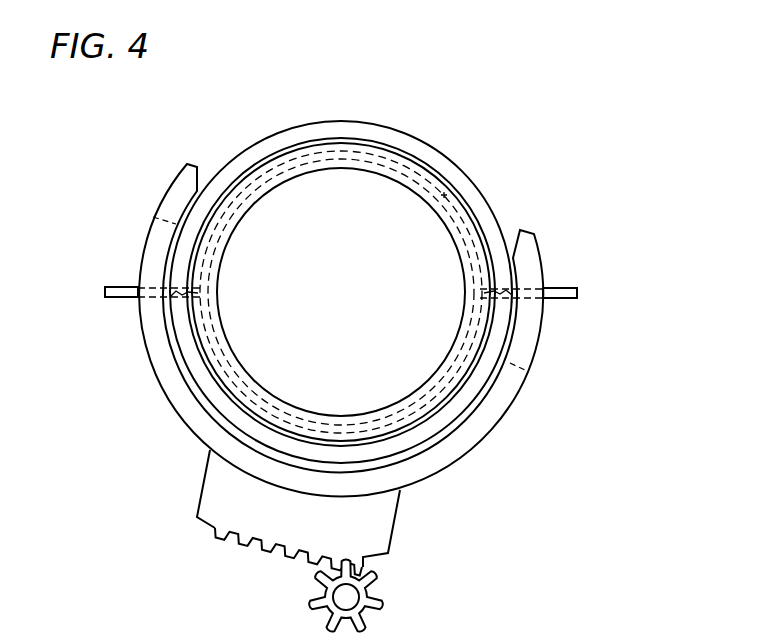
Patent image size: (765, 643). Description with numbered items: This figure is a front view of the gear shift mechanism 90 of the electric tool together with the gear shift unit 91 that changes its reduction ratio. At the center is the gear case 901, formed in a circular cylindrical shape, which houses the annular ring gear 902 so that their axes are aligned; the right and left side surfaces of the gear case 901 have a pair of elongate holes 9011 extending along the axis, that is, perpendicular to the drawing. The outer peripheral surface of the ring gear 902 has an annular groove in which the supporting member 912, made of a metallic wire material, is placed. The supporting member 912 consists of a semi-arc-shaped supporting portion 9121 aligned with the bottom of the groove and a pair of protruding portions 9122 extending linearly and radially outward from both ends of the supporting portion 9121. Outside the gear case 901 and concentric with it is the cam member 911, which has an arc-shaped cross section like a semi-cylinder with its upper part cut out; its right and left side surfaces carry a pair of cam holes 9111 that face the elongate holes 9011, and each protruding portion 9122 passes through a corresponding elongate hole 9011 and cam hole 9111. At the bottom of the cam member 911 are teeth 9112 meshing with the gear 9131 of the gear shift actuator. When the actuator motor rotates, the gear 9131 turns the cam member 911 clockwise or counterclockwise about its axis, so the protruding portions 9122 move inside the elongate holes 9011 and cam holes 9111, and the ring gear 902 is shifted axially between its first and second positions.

The gear shift mechanism 90 is at (507, 206).
The gear case 901 is at (404, 141).
The ring gear 902 is at (300, 150).
The elongate holes 9011 is at (208, 299).
The gear shift unit 91 is at (437, 535).
The cam member 911 is at (470, 442).
The cam holes 9111 is at (150, 255).
The teeth 9112 is at (215, 548).
The supporting member 912 is at (457, 183).
The supporting portion 9121 is at (343, 150).
The protruding portions 9122 is at (105, 292).
The gear 9131 is at (382, 601).